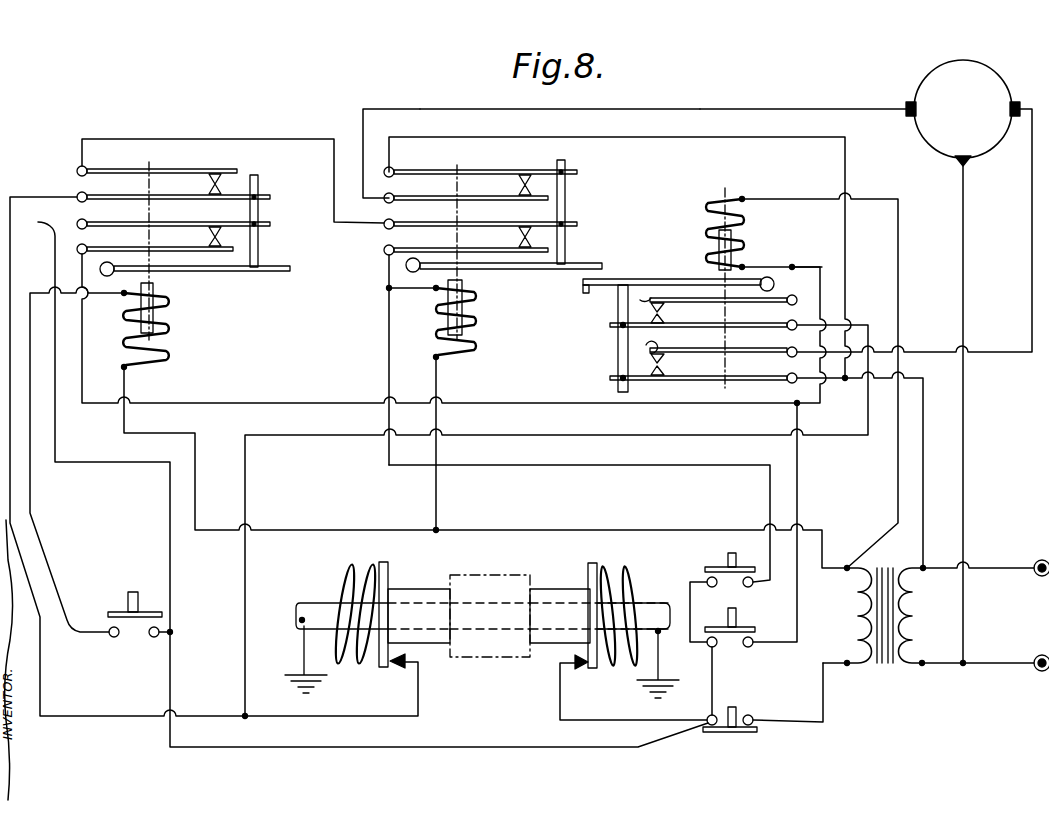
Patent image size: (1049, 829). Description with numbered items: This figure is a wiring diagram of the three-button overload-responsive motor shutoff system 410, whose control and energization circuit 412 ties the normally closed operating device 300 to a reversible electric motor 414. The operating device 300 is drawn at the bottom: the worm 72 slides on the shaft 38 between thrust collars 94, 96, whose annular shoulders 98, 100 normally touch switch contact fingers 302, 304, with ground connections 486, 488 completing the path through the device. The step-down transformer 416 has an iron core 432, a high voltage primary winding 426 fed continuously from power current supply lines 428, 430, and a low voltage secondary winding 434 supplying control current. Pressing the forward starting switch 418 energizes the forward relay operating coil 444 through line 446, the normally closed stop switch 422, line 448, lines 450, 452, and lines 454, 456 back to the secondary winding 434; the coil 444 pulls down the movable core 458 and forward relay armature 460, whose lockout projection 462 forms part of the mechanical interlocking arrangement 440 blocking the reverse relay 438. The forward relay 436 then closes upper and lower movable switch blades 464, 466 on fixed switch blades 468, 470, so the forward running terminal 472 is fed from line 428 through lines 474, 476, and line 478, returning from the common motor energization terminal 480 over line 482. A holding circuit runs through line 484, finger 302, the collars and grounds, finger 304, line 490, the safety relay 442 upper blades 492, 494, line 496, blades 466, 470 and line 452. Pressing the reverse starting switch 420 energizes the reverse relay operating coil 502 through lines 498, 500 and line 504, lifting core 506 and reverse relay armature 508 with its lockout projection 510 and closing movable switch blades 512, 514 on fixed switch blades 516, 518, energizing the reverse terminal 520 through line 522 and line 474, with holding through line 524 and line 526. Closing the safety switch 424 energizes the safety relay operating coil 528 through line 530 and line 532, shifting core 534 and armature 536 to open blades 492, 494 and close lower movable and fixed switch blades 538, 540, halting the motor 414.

The power input shaft 38 is at (648, 604).
The worm 72 is at (508, 574).
The thrust collar 94 is at (544, 648).
The thrust collar 96 is at (414, 589).
The annular shoulder 98 is at (600, 566).
The annular shoulder 100 is at (386, 560).
The overload-responsive motor shutoff operating device 300 is at (542, 574).
The switch contact finger 302 is at (580, 670).
The switch contact finger 304 is at (400, 668).
The three-button overload-responsive motor shutoff system 410 is at (363, 96).
The control and energization circuit 412 is at (826, 100).
The reversible electric motor 414 is at (988, 66).
The step-down transformer 416 is at (888, 675).
The forward starting switch 418 is at (714, 562).
The reverse starting switch 420 is at (750, 620).
The stop switch 422 is at (750, 712).
The safety switch 424 is at (124, 590).
The high voltage primary winding 426 is at (918, 626).
The power current supply line 428 is at (1004, 562).
The power current supply line 430 is at (1002, 658).
The iron core 432 is at (870, 672).
The low voltage secondary winding 434 is at (852, 616).
The forward relay 436 is at (575, 162).
The reverse relay 438 is at (708, 202).
The mechanical interlocking arrangement 440 is at (606, 276).
The safety relay 442 is at (72, 155).
The forward relay operating coil 444 is at (477, 337).
The line 446 is at (822, 718).
The line 448 is at (716, 672).
The line 450 is at (588, 468).
The line 452 is at (414, 294).
The line 454 is at (438, 382).
The line 456 is at (124, 428).
The movable core 458 is at (463, 282).
The forward relay armature 460 is at (542, 270).
The lockout projection 462 is at (596, 264).
The upper movable switch blade 464 is at (578, 172).
The lower movable switch blade 466 is at (570, 226).
The upper fixed switch blade 468 is at (539, 185).
The lower fixed switch blade 470 is at (539, 237).
The forward running terminal 472 is at (912, 104).
The line 474 is at (924, 386).
The line 476 is at (845, 166).
The line 478 is at (660, 108).
The common motor energization terminal 480 is at (968, 164).
The line 482 is at (964, 252).
The line 484 is at (624, 722).
The ground connection 486 is at (652, 694).
The ground connection 488 is at (316, 688).
The line 490 is at (402, 716).
The upper movable switch blade 492 is at (260, 195).
The upper fixed switch blade 494 is at (237, 169).
The line 496 is at (210, 139).
The line 498 is at (798, 496).
The line 500 is at (280, 403).
The reverse relay operating coil 502 is at (746, 226).
The line 504 is at (898, 270).
The core 506 is at (744, 256).
The reverse relay armature 508 is at (688, 280).
The lockout projection 510 is at (586, 292).
The upper movable switch blade 512 is at (608, 326).
The lower movable switch blade 514 is at (608, 378).
The upper fixed switch blade 516 is at (648, 313).
The lower fixed switch blade 518 is at (652, 351).
The reverse terminal 520 is at (1016, 102).
The line 522 is at (1032, 312).
The line 524 is at (796, 270).
The line 526 is at (686, 436).
The safety relay operating coil 528 is at (168, 326).
The line 530 is at (365, 491).
The line 532 is at (32, 510).
The core 534 is at (153, 291).
The armature 536 is at (290, 269).
The lower movable switch blade 538 is at (270, 224).
The lower fixed switch blade 540 is at (224, 250).